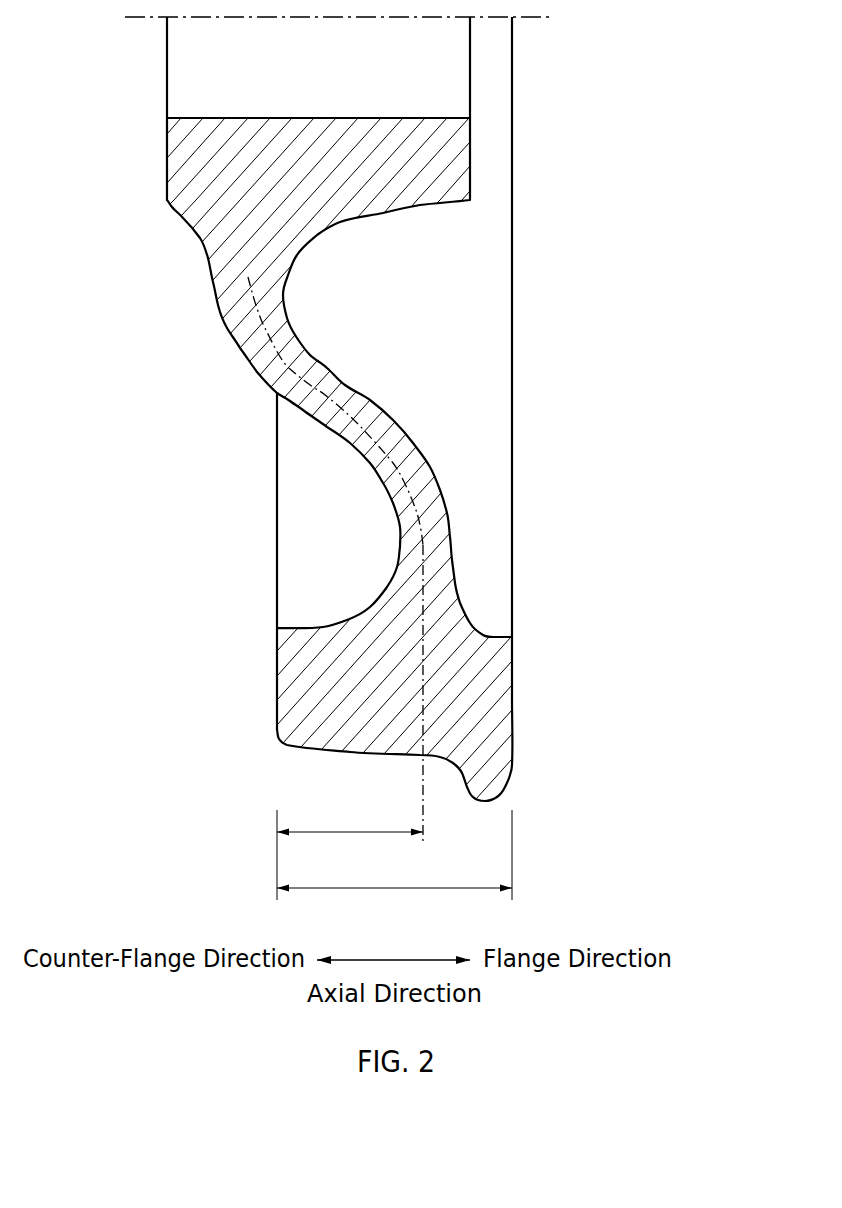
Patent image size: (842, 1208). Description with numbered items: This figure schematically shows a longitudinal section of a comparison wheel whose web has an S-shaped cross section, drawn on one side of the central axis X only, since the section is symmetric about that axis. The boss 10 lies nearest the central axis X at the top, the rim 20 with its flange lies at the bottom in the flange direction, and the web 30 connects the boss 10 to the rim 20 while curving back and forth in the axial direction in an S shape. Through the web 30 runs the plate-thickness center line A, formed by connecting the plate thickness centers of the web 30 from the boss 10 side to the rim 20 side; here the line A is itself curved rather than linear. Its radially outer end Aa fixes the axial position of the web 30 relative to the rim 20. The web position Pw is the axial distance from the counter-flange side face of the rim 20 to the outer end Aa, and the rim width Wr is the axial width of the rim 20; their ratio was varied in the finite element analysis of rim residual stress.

The boss 10 is at (472, 157).
The rim 20 is at (512, 705).
The web 30 is at (433, 469).
The plate-thickness center line A is at (283, 355).
The outer end Aa is at (423, 545).
The central axis X is at (346, 19).
The web position Pw is at (350, 822).
The rim width Wr is at (394, 877).